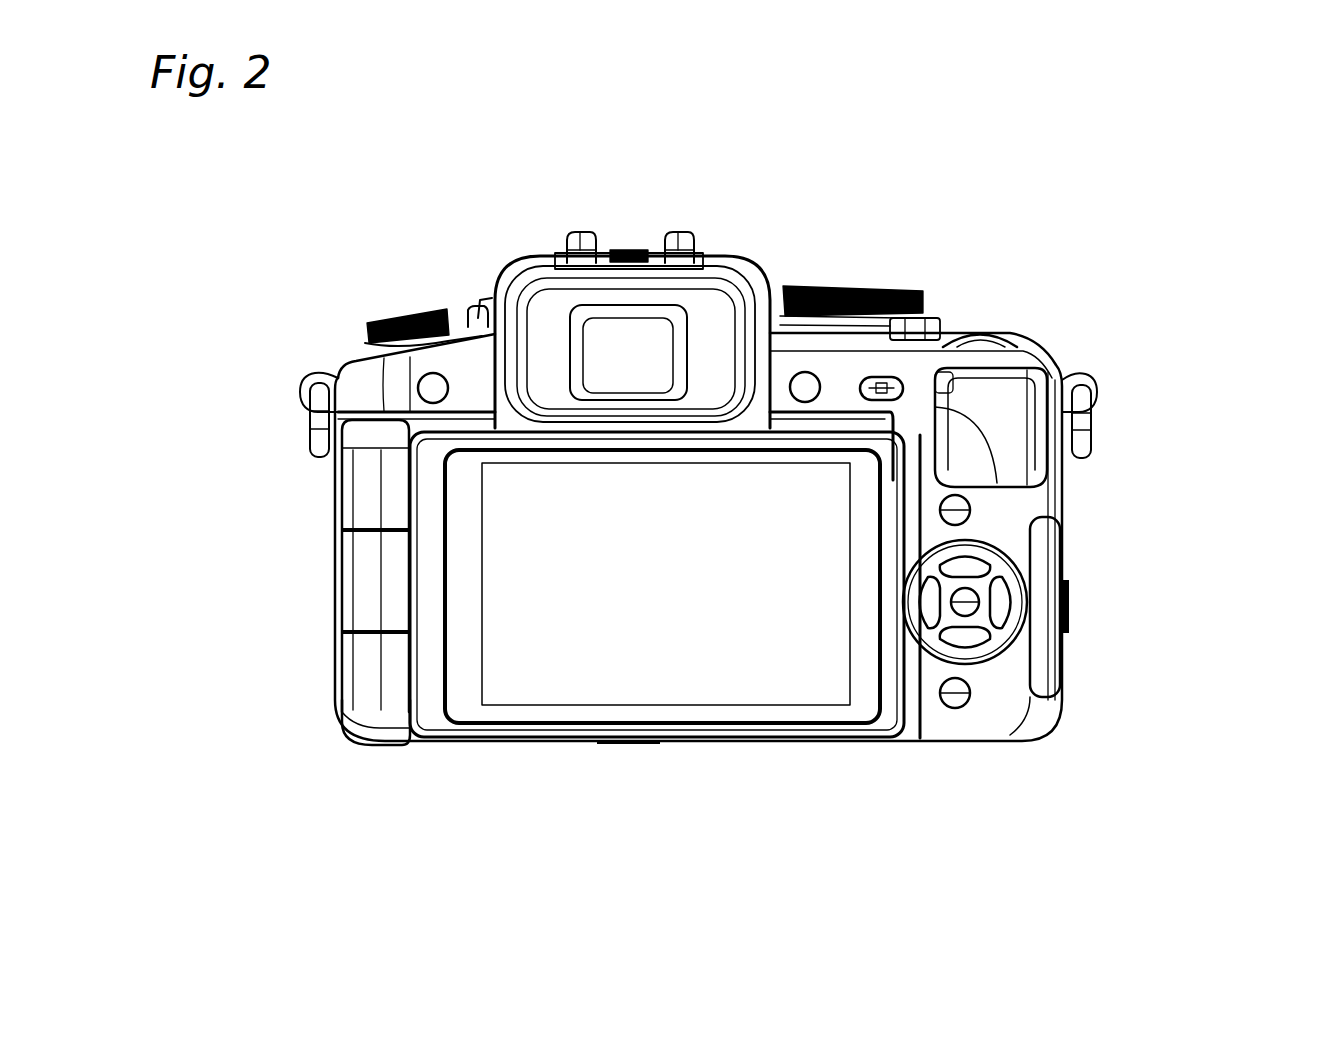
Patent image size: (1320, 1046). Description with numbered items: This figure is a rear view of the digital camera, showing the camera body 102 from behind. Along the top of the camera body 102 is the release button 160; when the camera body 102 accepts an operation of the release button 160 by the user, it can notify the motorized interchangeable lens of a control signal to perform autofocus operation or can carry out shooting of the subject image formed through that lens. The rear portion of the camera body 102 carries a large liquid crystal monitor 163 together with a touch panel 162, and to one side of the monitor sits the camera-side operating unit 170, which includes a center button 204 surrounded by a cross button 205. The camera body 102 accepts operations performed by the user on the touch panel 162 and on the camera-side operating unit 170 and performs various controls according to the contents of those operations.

The camera body 102 is at (525, 262).
The release button 160 is at (983, 330).
The touch panel 162 is at (663, 668).
The liquid crystal monitor 163 is at (550, 668).
The camera-side operating unit 170 is at (1087, 544).
The center button 204 is at (963, 588).
The cross button 205 is at (967, 548).